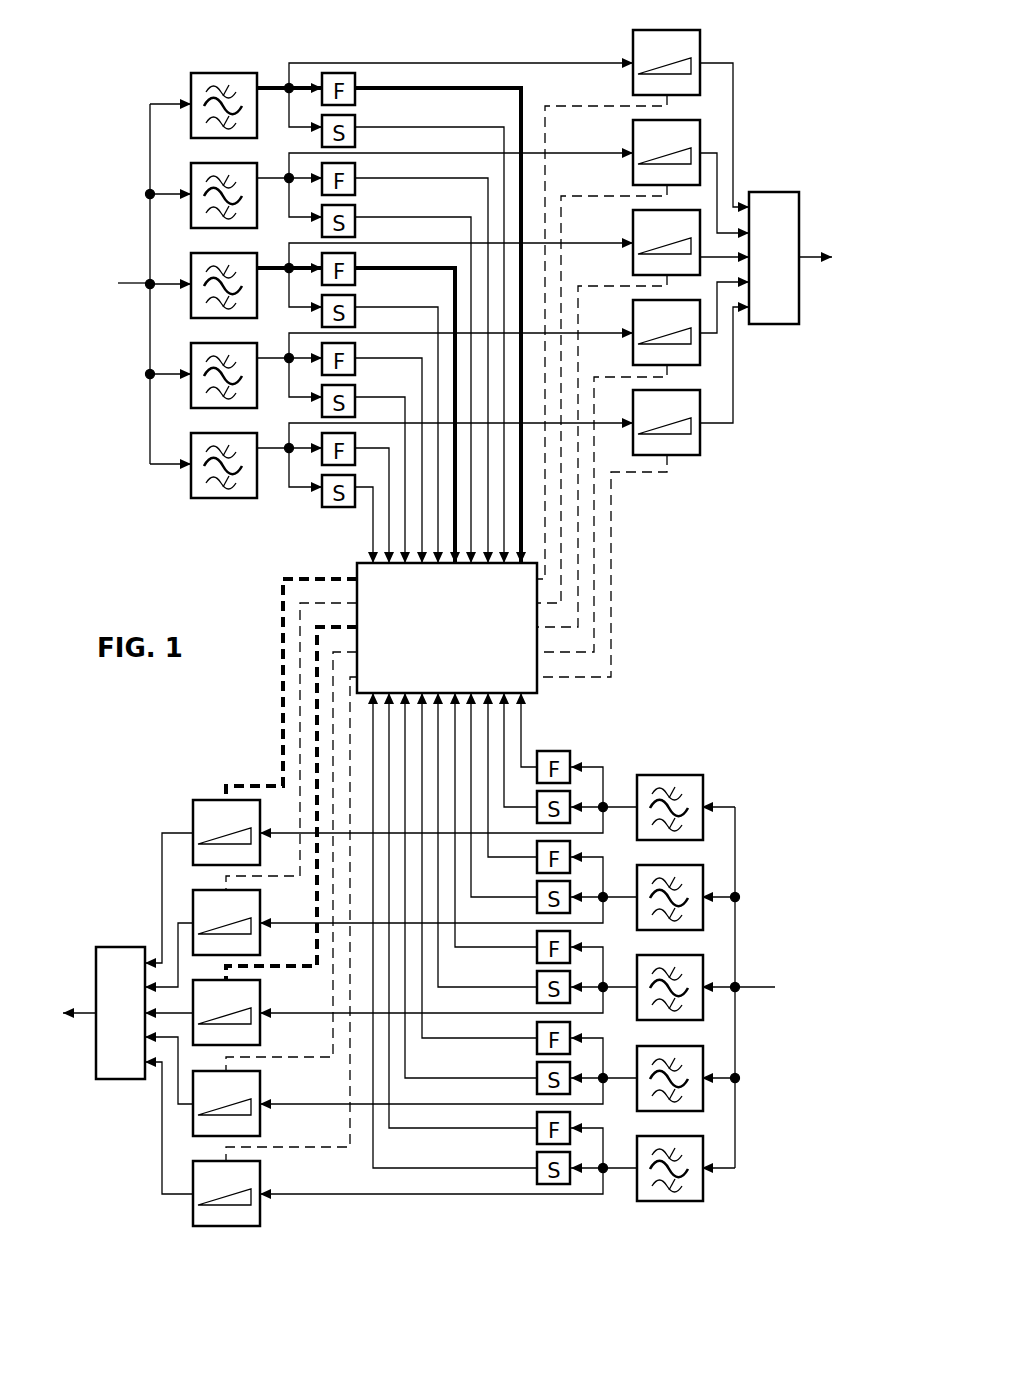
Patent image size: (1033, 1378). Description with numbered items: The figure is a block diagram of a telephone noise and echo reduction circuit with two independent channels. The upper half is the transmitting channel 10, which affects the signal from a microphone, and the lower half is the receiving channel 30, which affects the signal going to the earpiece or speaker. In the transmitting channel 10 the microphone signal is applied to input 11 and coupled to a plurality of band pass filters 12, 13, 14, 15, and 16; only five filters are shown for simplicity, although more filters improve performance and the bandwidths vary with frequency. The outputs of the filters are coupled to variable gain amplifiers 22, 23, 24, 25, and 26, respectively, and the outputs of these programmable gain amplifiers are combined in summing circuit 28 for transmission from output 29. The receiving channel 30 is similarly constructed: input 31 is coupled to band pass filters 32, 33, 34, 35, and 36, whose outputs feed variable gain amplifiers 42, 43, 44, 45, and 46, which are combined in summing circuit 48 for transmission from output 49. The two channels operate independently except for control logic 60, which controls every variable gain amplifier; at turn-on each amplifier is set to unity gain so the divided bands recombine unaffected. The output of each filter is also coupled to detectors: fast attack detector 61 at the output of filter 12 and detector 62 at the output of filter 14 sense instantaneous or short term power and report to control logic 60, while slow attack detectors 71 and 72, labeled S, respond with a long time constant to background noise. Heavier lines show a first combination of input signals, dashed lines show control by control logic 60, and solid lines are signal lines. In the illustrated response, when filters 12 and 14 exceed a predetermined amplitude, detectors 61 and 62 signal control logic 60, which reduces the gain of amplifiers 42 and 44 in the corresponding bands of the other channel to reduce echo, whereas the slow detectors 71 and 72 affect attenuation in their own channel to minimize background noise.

The transmitting channel 10 is at (146, 64).
The input 11 is at (133, 283).
The band pass filter 12 is at (190, 88).
The band pass filter 13 is at (190, 178).
The band pass filter 14 is at (190, 268).
The band pass filter 15 is at (190, 358).
The band pass filter 16 is at (190, 448).
The variable gain amplifier 22 is at (633, 60).
The variable gain amplifier 23 is at (633, 150).
The variable gain amplifier 24 is at (633, 240).
The variable gain amplifier 25 is at (633, 330).
The variable gain amplifier 26 is at (702, 442).
The summing circuit 28 is at (772, 327).
The output 29 is at (808, 252).
The receiving channel 30 is at (678, 743).
The input 31 is at (758, 987).
The band pass filter 32 is at (703, 791).
The band pass filter 33 is at (703, 881).
The band pass filter 34 is at (703, 971).
The band pass filter 35 is at (703, 1062).
The band pass filter 36 is at (703, 1152).
The variable gain amplifier 42 is at (193, 825).
The variable gain amplifier 43 is at (262, 905).
The variable gain amplifier 44 is at (262, 995).
The variable gain amplifier 45 is at (262, 1086).
The variable gain amplifier 46 is at (262, 1176).
The summing circuit 48 is at (122, 1081).
The output 49 is at (84, 997).
The control logic 60 is at (447, 628).
The detector 61 is at (357, 100).
The detector 62 is at (357, 280).
The slow attack detector 71 is at (357, 140).
The slow attack detector 72 is at (357, 228).